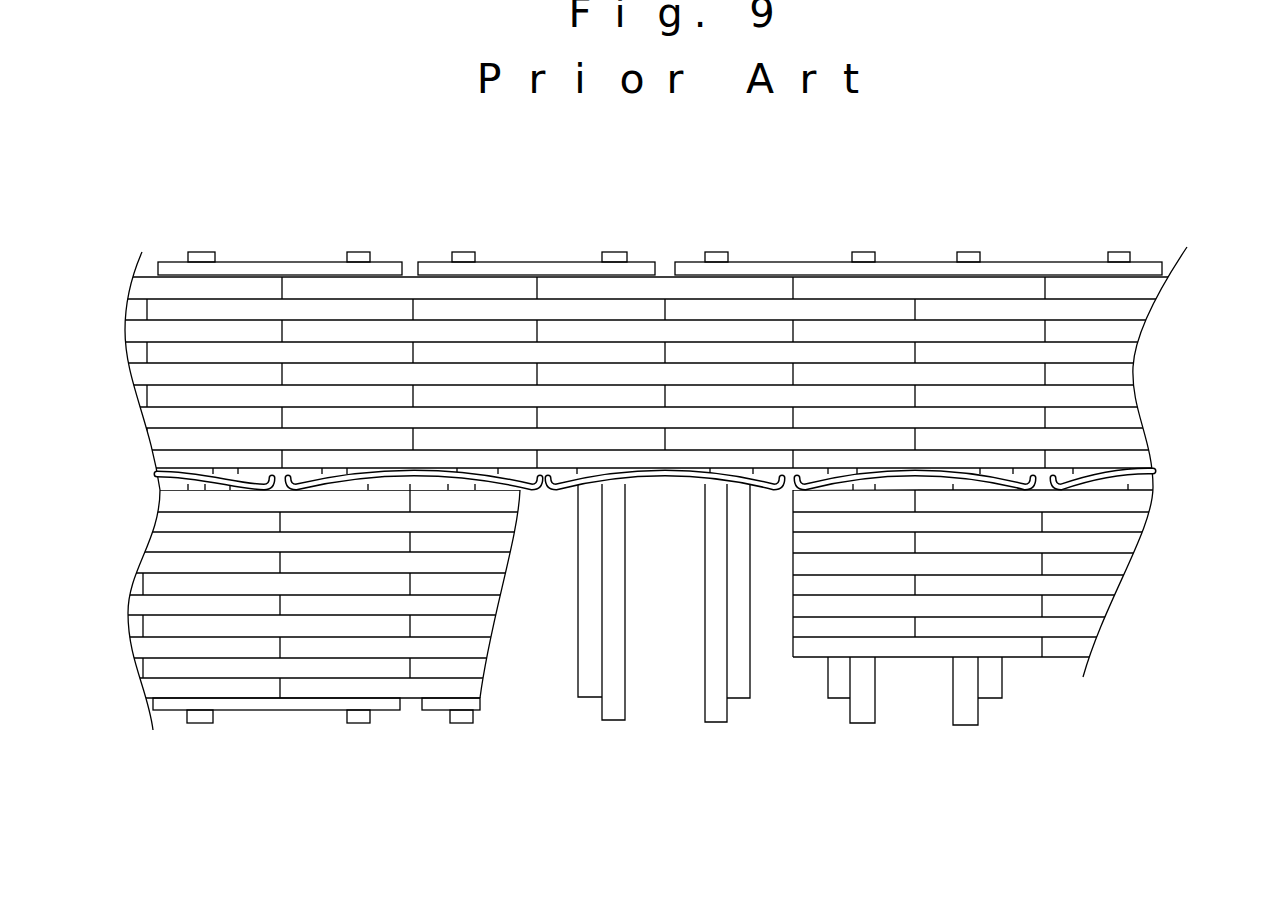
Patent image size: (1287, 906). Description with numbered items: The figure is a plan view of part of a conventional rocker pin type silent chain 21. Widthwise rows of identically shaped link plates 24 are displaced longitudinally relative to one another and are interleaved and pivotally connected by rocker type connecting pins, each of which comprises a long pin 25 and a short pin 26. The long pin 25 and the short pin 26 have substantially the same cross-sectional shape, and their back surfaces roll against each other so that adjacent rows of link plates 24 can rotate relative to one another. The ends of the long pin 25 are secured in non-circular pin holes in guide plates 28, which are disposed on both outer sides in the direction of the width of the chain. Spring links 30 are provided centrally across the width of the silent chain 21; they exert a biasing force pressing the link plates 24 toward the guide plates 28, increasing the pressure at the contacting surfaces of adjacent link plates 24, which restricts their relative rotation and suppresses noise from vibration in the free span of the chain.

The silent chain 21 is at (1023, 240).
The link plates 24 is at (522, 418).
The long pin 25 is at (200, 723).
The short pin 26 is at (588, 697).
The guide plates 28 is at (255, 268).
The spring links 30 is at (1027, 478).